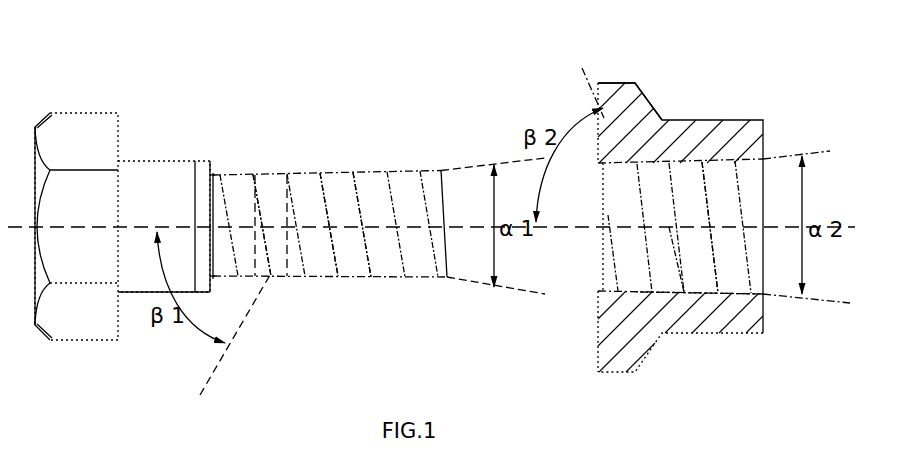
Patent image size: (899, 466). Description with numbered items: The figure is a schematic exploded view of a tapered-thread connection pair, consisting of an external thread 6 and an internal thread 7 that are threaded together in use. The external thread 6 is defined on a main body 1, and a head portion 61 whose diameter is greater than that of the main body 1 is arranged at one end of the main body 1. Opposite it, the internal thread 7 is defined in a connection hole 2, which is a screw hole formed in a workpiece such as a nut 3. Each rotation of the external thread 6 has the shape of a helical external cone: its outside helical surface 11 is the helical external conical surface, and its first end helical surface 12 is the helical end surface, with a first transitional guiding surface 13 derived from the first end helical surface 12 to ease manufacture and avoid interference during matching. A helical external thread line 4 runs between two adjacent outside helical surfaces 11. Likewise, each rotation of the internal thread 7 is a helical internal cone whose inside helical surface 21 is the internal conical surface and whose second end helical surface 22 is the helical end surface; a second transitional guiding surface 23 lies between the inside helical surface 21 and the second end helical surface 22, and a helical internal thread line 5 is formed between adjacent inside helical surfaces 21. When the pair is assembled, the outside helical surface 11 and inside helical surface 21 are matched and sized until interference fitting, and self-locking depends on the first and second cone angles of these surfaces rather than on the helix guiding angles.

The head portion 61 is at (72, 187).
The main body 1 is at (157, 187).
The external thread line 4 is at (262, 220).
The outside helical surface 11 is at (273, 200).
The first transitional guiding surface 13 is at (320, 176).
The first end helical surface 12 is at (360, 205).
The external thread 6 is at (377, 218).
The connection hole 2 is at (653, 207).
The internal thread line 5 is at (645, 168).
The inside helical surface 21 is at (688, 190).
The nut 3 is at (708, 133).
The second transitional guiding surface 23 is at (710, 160).
The internal thread 7 is at (675, 292).
The second end helical surface 22 is at (713, 255).